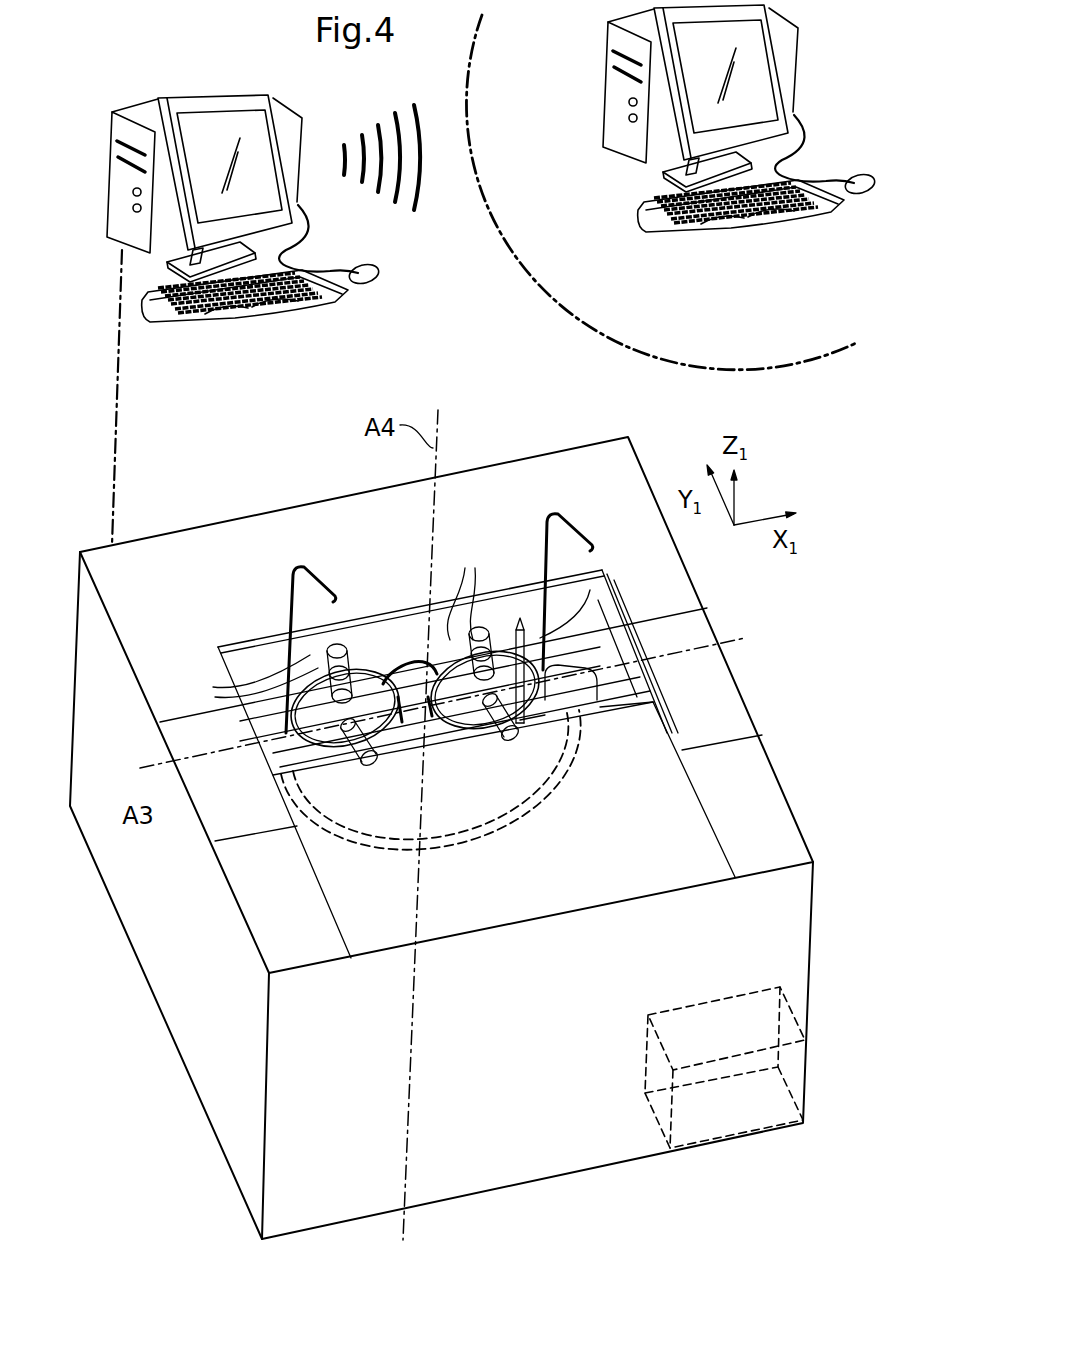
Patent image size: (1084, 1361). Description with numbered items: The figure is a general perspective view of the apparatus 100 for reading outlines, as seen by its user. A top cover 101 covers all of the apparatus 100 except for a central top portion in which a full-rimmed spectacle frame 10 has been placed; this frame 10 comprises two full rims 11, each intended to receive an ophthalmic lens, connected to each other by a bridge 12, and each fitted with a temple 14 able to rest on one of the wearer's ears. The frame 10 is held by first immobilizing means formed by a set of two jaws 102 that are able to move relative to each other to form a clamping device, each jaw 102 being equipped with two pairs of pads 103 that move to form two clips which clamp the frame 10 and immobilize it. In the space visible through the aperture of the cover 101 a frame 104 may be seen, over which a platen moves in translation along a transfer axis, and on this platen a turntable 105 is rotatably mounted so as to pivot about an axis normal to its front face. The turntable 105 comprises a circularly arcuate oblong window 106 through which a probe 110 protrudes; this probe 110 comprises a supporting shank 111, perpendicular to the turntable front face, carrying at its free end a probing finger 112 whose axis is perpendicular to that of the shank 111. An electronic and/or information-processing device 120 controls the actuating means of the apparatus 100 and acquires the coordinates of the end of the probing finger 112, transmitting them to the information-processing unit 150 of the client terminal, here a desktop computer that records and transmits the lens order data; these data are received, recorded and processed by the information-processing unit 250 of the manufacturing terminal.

The full-rimmed spectacle frame 10 is at (436, 748).
The full rim 11 is at (307, 763).
The bridge 12 is at (412, 667).
The temple 14 is at (291, 588).
The apparatus for reading outlines 100 is at (249, 497).
The top cover 101 is at (762, 760).
The jaw 102 is at (240, 654).
The pair of pads 103 is at (377, 617).
The frame 104 is at (588, 698).
The turntable 105 is at (260, 752).
The circularly arcuate oblong window 106 is at (488, 752).
The probe 110 is at (606, 569).
The supporting shank 111 is at (540, 718).
The probing finger 112 is at (534, 640).
The electronic and/or information-processing device 120 is at (742, 1117).
The information-processing unit 150 is at (143, 92).
The information-processing unit 250 is at (603, 195).